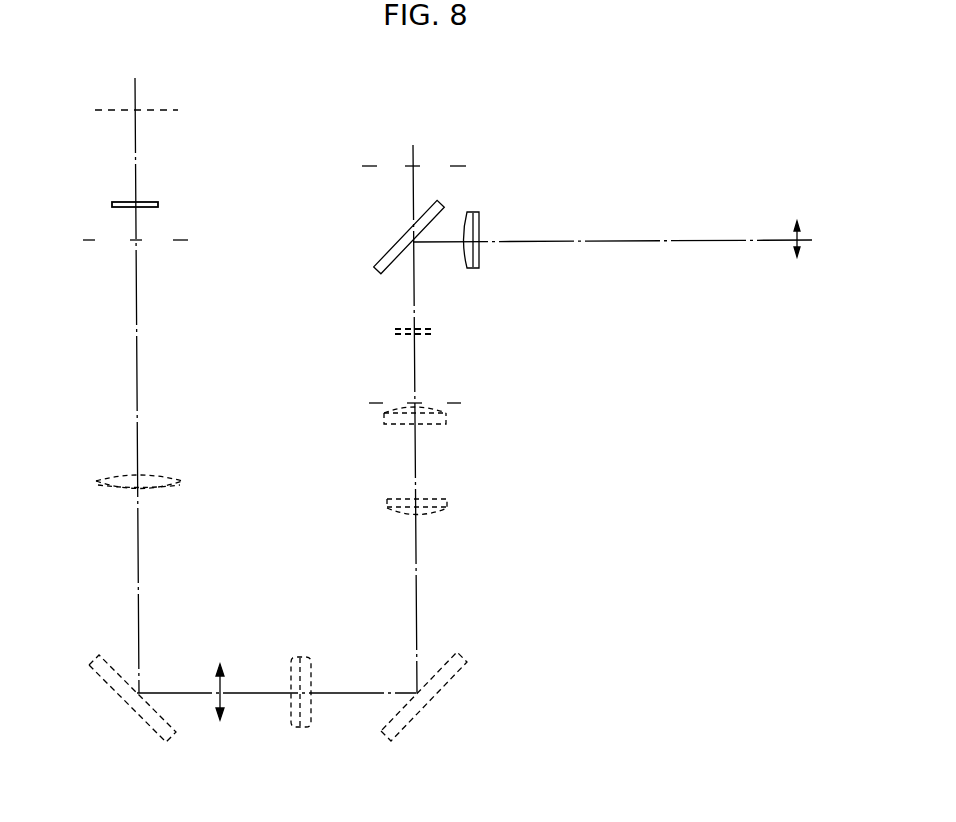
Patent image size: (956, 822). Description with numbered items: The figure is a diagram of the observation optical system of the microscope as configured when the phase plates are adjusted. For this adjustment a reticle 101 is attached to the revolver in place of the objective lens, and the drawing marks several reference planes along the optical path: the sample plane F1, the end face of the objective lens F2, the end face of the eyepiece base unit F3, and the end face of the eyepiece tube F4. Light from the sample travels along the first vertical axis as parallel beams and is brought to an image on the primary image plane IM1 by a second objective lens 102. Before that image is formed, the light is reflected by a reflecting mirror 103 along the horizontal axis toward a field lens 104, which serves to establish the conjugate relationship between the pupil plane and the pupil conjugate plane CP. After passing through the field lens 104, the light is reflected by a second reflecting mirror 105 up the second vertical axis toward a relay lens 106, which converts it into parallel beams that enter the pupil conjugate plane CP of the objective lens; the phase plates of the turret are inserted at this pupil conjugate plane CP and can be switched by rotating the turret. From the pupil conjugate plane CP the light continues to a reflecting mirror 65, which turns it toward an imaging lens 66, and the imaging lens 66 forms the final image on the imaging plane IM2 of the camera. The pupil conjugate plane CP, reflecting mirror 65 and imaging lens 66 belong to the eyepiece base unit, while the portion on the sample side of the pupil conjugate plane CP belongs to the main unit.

The reticle 101 is at (160, 204).
The second objective lens 102 is at (184, 481).
The reflecting mirror 103 is at (128, 702).
The field lens 104 is at (322, 737).
The reflecting mirror 105 is at (432, 700).
The relay lens 106 is at (462, 404).
The reflecting mirror 65 is at (390, 247).
The imaging lens 66 is at (480, 257).
The pupil conjugate plane CP is at (437, 329).
The sample plane F1 is at (120, 110).
The end face of the objective lens F2 is at (120, 240).
The end face of the eyepiece base unit F3 is at (399, 404).
The end face of the eyepiece tube F4 is at (396, 167).
The primary image plane IM1 is at (219, 708).
The imaging plane IM2 is at (789, 225).